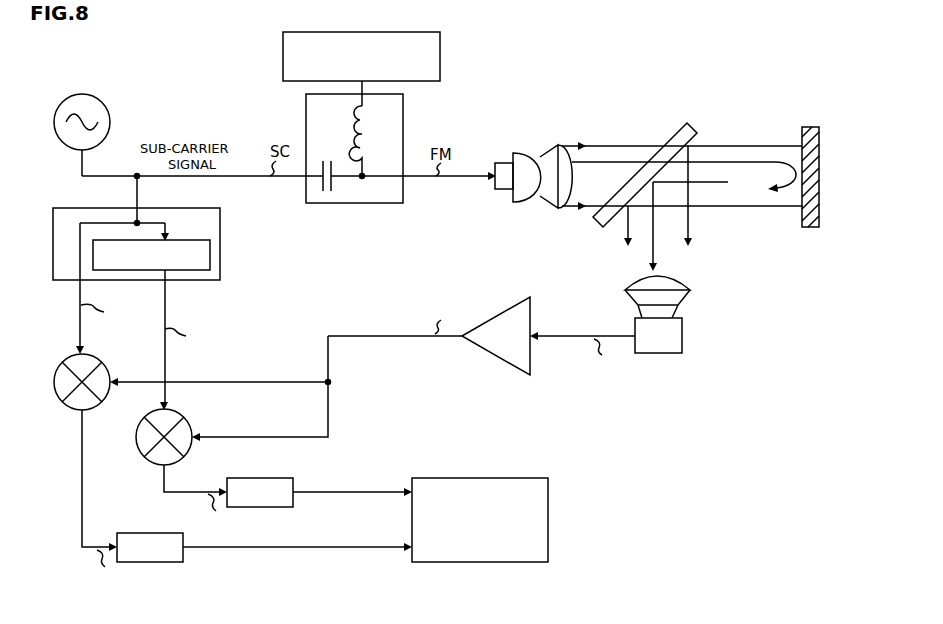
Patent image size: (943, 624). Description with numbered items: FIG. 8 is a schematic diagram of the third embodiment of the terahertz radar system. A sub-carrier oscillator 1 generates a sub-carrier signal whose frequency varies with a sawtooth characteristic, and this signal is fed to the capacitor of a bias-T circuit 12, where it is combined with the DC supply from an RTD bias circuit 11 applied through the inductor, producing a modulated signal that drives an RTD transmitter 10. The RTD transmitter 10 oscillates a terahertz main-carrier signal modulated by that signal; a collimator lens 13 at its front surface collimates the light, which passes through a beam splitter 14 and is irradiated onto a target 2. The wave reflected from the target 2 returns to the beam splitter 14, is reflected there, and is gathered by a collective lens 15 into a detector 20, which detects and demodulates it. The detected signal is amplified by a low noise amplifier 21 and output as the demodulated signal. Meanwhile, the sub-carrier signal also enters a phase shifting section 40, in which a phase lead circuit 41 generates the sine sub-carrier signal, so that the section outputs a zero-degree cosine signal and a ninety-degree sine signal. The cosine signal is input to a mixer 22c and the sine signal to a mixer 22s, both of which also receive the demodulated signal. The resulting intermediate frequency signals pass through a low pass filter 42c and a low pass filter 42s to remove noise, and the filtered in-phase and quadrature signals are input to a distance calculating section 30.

The sub-carrier oscillator 1 is at (92, 95).
The target 2 is at (804, 127).
The RTD transmitter 10 is at (525, 152).
The RTD bias circuit 11 is at (418, 32).
The bias-T circuit 12 is at (326, 204).
The collimator lens 13 is at (559, 212).
The beam splitter 14 is at (686, 125).
The collective lens 15 is at (691, 289).
The detector 20 is at (633, 326).
The low noise amplifier 21 is at (515, 304).
The mixer 22c is at (101, 366).
The mixer 22s is at (183, 418).
The distance calculating section 30 is at (496, 478).
The phase shifting section 40 is at (196, 209).
The phase lead circuit 41 is at (195, 241).
The low pass filter 42c is at (160, 533).
The low pass filter 42s is at (270, 478).